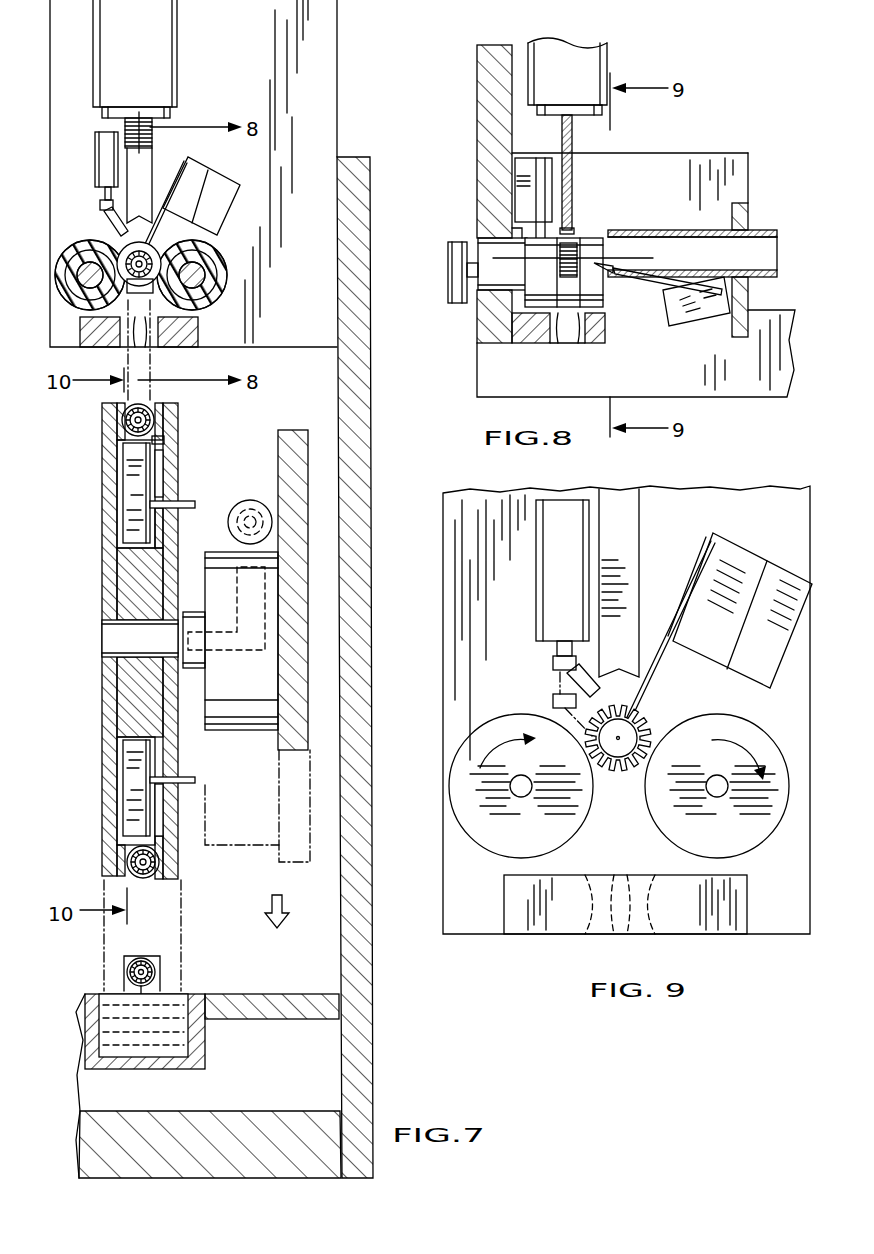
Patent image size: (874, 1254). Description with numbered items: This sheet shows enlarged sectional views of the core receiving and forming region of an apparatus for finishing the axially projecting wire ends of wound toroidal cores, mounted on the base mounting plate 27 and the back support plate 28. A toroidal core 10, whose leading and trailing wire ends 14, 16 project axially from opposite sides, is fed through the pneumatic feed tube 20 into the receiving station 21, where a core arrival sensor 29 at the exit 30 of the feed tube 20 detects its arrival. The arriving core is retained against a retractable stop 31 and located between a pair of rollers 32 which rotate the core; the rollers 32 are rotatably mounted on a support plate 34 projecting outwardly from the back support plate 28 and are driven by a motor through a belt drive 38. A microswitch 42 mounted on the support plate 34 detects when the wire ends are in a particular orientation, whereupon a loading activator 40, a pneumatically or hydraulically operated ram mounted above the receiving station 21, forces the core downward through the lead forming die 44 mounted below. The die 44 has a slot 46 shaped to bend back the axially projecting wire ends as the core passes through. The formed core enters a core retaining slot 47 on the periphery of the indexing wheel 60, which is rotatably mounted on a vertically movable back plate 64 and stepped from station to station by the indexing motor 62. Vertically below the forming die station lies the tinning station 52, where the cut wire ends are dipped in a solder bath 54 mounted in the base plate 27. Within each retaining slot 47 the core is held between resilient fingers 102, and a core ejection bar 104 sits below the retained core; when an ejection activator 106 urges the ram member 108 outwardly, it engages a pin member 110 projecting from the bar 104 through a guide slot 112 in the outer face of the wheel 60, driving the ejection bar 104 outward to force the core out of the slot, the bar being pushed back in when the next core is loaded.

In FIG. 7, the toroidal core 10 is at (148, 252).
In FIG. 8, the toroidal core 10 is at (580, 236).
In FIG. 9, the toroidal core 10 is at (618, 778).
In FIG. 8, the leading wire end 14 is at (505, 252).
In FIG. 8, the trailing wire end 16 is at (640, 257).
In FIG. 8, the pneumatic feed tube 20 is at (761, 230).
In FIG. 7, the receiving station 21 is at (106, 232).
In FIG. 8, the receiving station 21 is at (583, 216).
In FIG. 9, the receiving station 21 is at (670, 716).
In FIG. 7, the base mounting plate 27 is at (247, 1111).
In FIG. 7, the back support plate 28 is at (365, 460).
In FIG. 8, the back support plate 28 is at (738, 380).
In FIG. 8, the core arrival sensor 29 is at (673, 278).
In FIG. 8, the exit of feed tube 30 is at (633, 230).
In FIG. 7, the retractable stop 31 is at (107, 222).
In FIG. 9, the retractable stop 31 is at (553, 663).
In FIG. 7, the rollers 32 is at (75, 305).
In FIG. 8, the rollers 32 is at (592, 282).
In FIG. 9, the rollers 32 is at (665, 814).
In FIG. 7, the support plate 34 is at (336, 107).
In FIG. 8, the support plate 34 is at (477, 112).
In FIG. 9, the support plate 34 is at (452, 567).
In FIG. 8, the belt drive 38 is at (463, 298).
In FIG. 7, the loading activator 40 is at (149, 158).
In FIG. 8, the loading activator 40 is at (573, 165).
In FIG. 9, the loading activator 40 is at (629, 552).
In FIG. 7, the microswitch 42 is at (192, 177).
In FIG. 8, the microswitch 42 is at (515, 188).
In FIG. 9, the microswitch 42 is at (690, 645).
In FIG. 7, the lead forming die 44 is at (173, 338).
In FIG. 8, the lead forming die 44 is at (592, 336).
In FIG. 9, the lead forming die 44 is at (517, 930).
In FIG. 7, the slot 46 is at (135, 340).
In FIG. 8, the slot 46 is at (563, 337).
In FIG. 9, the slot 46 is at (627, 913).
In FIG. 7, the core retaining slot 47 is at (165, 438).
In FIG. 7, the tinning station 52 is at (170, 978).
In FIG. 7, the solder bath 54 is at (178, 1027).
In FIG. 7, the indexing wheel 60 is at (102, 572).
In FIG. 7, the indexing motor 62 is at (247, 720).
In FIG. 7, the back plate 64 is at (293, 437).
In FIG. 7, the resilient fingers 102 is at (114, 407).
In FIG. 7, the core ejection bar 104 is at (130, 460).
In FIG. 7, the ejection activator 106 is at (246, 502).
In FIG. 7, the ram member 108 is at (225, 653).
In FIG. 7, the pin member 110 is at (187, 508).
In FIG. 7, the guide slot 112 is at (170, 470).